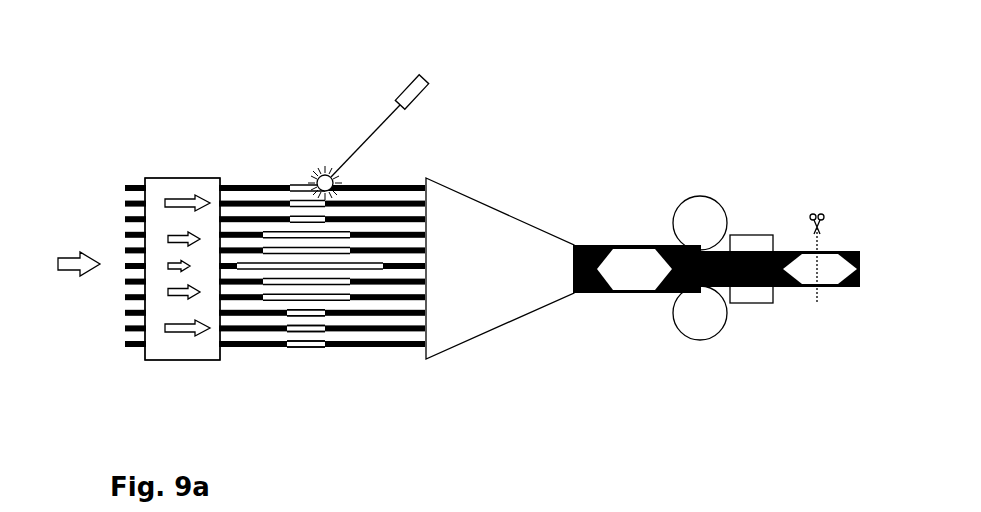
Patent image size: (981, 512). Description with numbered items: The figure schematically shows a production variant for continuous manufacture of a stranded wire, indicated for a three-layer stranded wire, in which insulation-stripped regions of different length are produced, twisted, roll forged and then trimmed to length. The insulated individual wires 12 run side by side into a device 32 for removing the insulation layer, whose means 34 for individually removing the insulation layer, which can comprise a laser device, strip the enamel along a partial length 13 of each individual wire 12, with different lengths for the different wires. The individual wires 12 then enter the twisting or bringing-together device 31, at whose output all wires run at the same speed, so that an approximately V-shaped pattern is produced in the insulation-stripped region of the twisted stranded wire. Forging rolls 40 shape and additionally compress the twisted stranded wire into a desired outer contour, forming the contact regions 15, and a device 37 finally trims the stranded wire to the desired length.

The individual wire 12 is at (272, 333).
The partial length 13 is at (322, 346).
The contact region 15 is at (830, 270).
The bringing-together device 31 is at (530, 222).
The device for removing the insulation layer 32 is at (405, 85).
The means for individually removing the insulation layer 34 is at (424, 79).
The device for trimming 37 is at (806, 195).
The forging rolls 40 is at (757, 303).